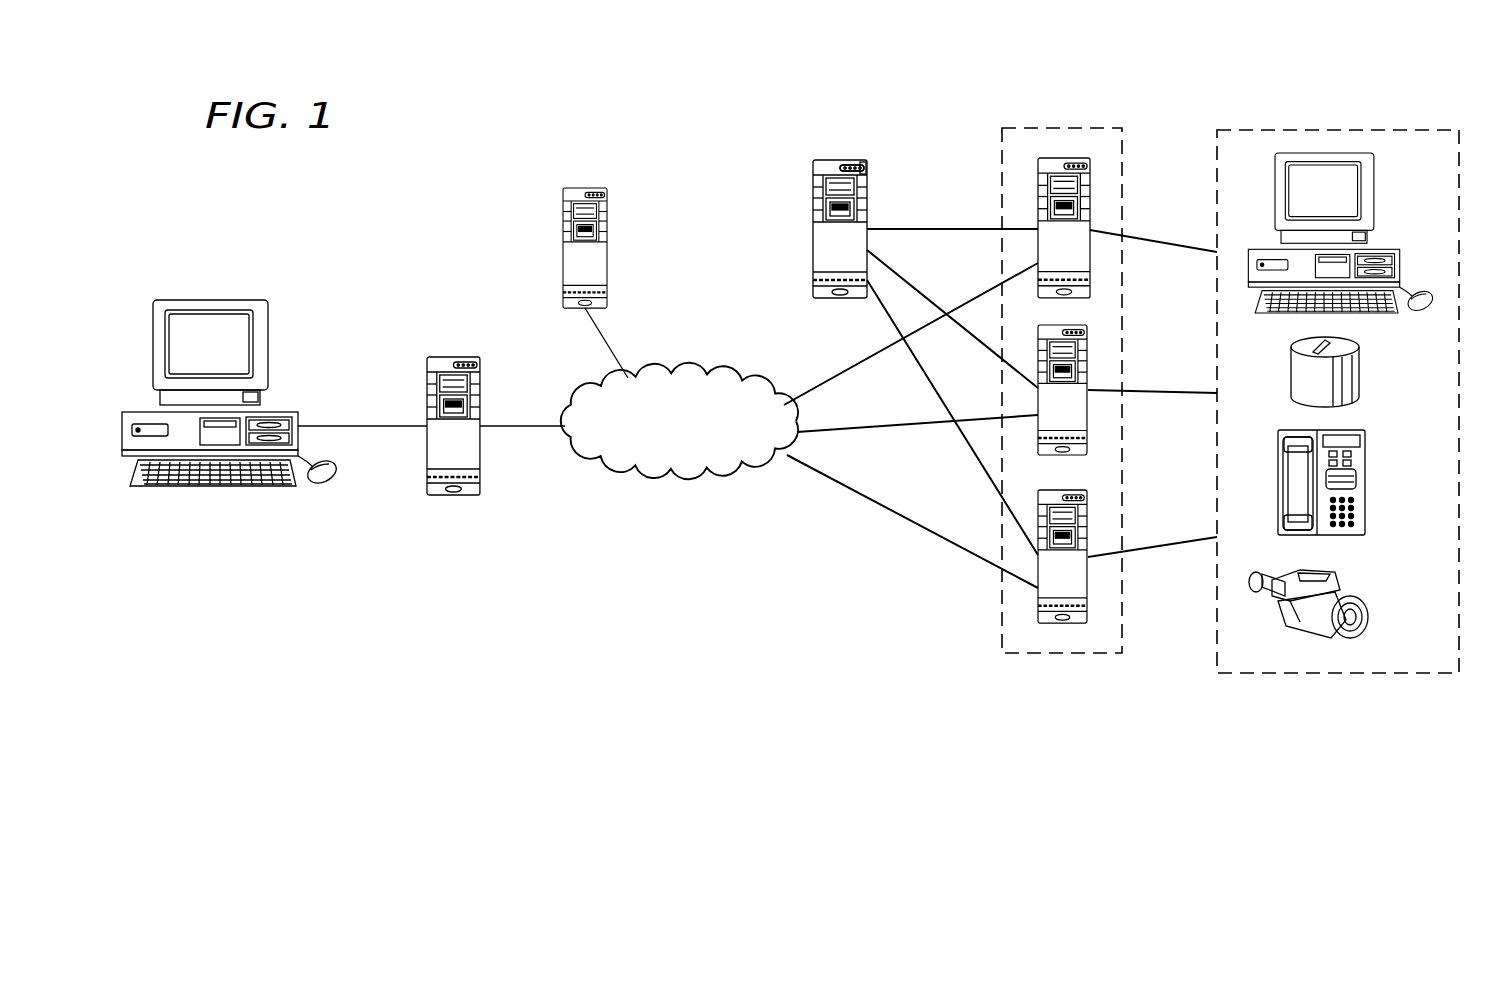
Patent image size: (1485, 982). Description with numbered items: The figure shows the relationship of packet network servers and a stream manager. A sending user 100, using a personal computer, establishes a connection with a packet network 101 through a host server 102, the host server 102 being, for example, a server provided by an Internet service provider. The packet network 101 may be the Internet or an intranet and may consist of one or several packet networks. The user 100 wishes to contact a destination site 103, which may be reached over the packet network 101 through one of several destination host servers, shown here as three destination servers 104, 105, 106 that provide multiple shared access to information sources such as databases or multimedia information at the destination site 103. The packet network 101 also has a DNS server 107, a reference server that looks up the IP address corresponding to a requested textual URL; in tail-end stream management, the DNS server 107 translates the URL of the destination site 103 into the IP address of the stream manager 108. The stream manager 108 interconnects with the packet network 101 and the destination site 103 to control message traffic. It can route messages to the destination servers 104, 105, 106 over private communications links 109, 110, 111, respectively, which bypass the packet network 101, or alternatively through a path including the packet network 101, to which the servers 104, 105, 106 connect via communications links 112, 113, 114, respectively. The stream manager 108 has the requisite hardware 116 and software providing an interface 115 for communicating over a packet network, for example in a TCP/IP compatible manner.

The sending user 100 is at (210, 300).
The packet network 101 is at (670, 477).
The host server 102 is at (437, 357).
The destination site 103 is at (1062, 128).
The destination server 104 is at (1093, 192).
The destination server 105 is at (1090, 358).
The destination server 106 is at (1063, 624).
The DNS server 107 is at (585, 188).
The stream manager 108 is at (825, 163).
The communications link 109 is at (935, 229).
The communications link 110 is at (912, 284).
The communications link 111 is at (887, 321).
The communications link 112 is at (848, 374).
The communications link 113 is at (887, 430).
The communications link 114 is at (907, 523).
The interface 115 is at (843, 160).
The hardware 116 is at (862, 163).